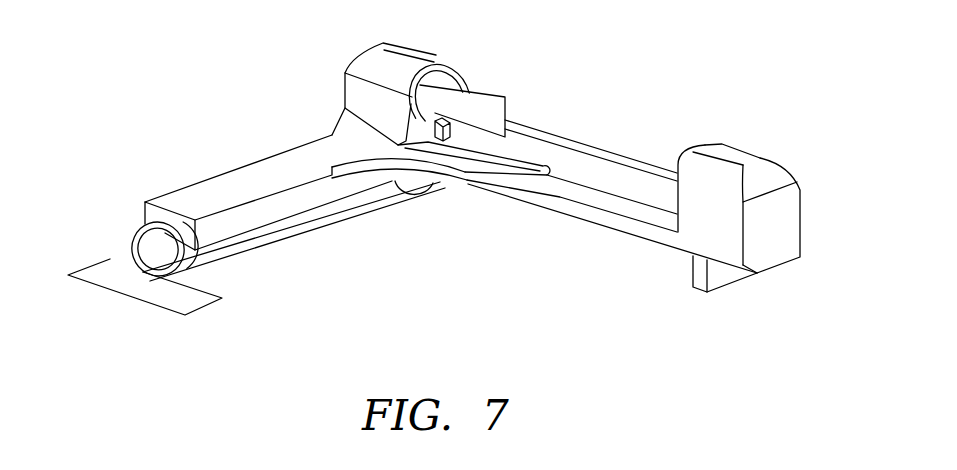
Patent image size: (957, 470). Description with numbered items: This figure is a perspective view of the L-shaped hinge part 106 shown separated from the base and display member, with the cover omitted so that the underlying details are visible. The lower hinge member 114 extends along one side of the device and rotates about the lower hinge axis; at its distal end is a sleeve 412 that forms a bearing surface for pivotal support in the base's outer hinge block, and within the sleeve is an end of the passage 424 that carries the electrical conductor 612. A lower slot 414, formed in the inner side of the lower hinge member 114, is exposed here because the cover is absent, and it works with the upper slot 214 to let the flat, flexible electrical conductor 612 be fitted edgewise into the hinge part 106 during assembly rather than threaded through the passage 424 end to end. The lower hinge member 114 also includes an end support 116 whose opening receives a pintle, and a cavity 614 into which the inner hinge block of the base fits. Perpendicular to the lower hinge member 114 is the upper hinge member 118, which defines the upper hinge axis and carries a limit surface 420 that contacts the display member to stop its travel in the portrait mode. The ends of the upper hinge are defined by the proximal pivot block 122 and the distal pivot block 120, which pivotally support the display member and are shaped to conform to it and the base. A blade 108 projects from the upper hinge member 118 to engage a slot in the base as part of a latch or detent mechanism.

The hinge part 106 is at (795, 245).
The blade 108 is at (722, 292).
The lower hinge member 114 is at (233, 177).
The end support 116 is at (432, 185).
The upper hinge member 118 is at (614, 208).
The distal pivot block 120 is at (741, 156).
The proximal pivot block 122 is at (420, 44).
The upper slot 214 is at (517, 158).
The sleeve 412 is at (165, 212).
The lower slot 414 is at (222, 250).
The limit surface 420 is at (620, 158).
The passage 424 is at (147, 240).
The electrical conductor 612 is at (475, 100).
The cavity 614 is at (410, 197).